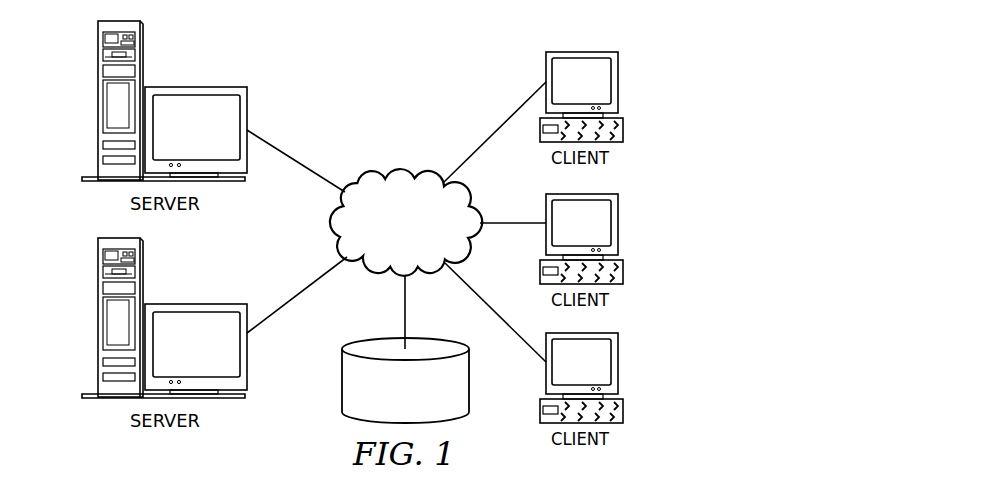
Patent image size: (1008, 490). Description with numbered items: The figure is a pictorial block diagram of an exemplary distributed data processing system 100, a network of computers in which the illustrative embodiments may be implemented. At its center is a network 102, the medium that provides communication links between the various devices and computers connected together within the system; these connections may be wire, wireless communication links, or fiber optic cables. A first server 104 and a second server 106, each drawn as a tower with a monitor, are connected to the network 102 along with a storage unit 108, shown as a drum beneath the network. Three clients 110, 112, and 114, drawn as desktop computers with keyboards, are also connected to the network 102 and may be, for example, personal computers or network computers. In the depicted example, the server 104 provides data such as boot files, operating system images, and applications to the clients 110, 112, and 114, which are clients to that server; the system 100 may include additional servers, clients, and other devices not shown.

The distributed data processing system 100 is at (458, 56).
The network 102 is at (378, 177).
The server 104 is at (98, 101).
The server 106 is at (98, 318).
The storage unit 108 is at (342, 390).
The client 110 is at (618, 82).
The client 112 is at (618, 223).
The client 114 is at (618, 363).